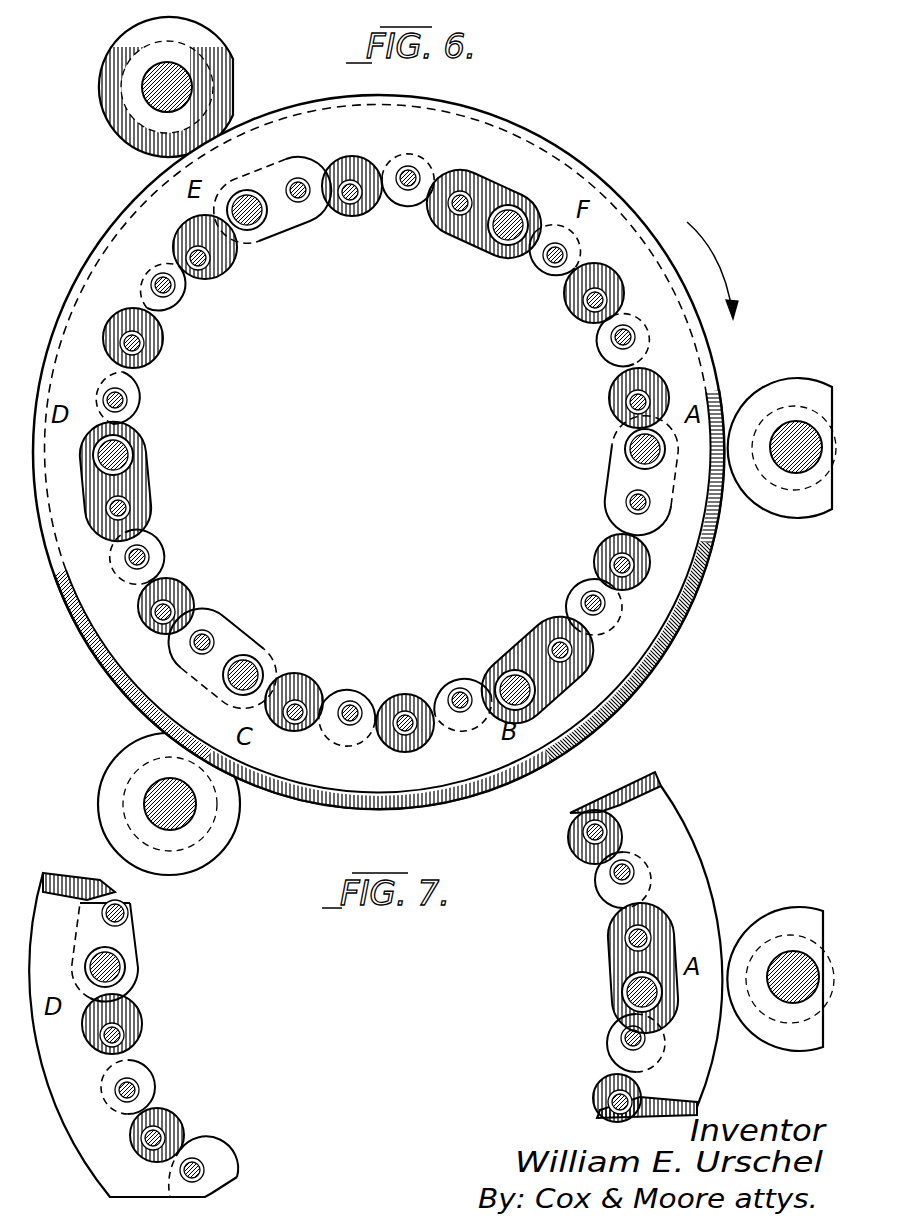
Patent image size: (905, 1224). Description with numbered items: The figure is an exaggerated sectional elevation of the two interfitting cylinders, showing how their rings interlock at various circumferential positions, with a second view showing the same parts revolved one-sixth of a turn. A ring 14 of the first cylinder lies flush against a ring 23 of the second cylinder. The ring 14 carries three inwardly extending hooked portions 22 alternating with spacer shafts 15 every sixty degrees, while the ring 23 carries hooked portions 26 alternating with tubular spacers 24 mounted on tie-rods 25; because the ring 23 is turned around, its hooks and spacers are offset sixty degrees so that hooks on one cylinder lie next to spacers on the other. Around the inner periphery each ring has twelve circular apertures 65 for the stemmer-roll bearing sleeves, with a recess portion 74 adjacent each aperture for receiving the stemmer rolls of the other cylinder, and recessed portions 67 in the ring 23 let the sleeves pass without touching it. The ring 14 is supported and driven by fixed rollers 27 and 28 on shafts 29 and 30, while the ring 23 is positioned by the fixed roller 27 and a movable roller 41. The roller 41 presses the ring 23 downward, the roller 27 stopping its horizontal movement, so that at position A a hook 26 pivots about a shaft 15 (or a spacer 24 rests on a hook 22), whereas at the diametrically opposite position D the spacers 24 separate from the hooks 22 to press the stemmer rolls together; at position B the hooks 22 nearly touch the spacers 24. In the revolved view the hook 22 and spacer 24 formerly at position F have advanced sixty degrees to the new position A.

In FIG. 6, the annular ring 14 is at (627, 237).
In FIG. 7, the annular ring 14 is at (82, 1145).
In FIG. 6, the shaft 15 is at (260, 223).
In FIG. 7, the shaft 15 is at (118, 958).
In FIG. 6, the hooked portion 22 is at (523, 250).
In FIG. 7, the hooked portion 22 is at (608, 1040).
In FIG. 6, the ring 23 is at (652, 677).
In FIG. 7, the ring 23 is at (698, 1108).
In FIG. 6, the tubular spacer 24 is at (495, 253).
In FIG. 7, the tubular spacer 24 is at (633, 998).
In FIG. 6, the tie-rod 25 is at (188, 76).
In FIG. 6, the hooked portion 26 is at (228, 272).
In FIG. 7, the hooked portion 26 is at (128, 1020).
In FIG. 6, the fixed roller 27 is at (765, 513).
In FIG. 7, the fixed roller 27 is at (767, 912).
In FIG. 6, the fixed roller 28 is at (233, 837).
In FIG. 6, the shaft 29 is at (805, 470).
In FIG. 7, the shaft 29 is at (797, 952).
In FIG. 6, the shaft 30 is at (153, 800).
In FIG. 6, the movable roller 41 is at (122, 142).
In FIG. 6, the circular aperture 65 is at (406, 192).
In FIG. 6, the recessed portion 67 is at (425, 684).
In FIG. 6, the recess portion 74 is at (320, 692).